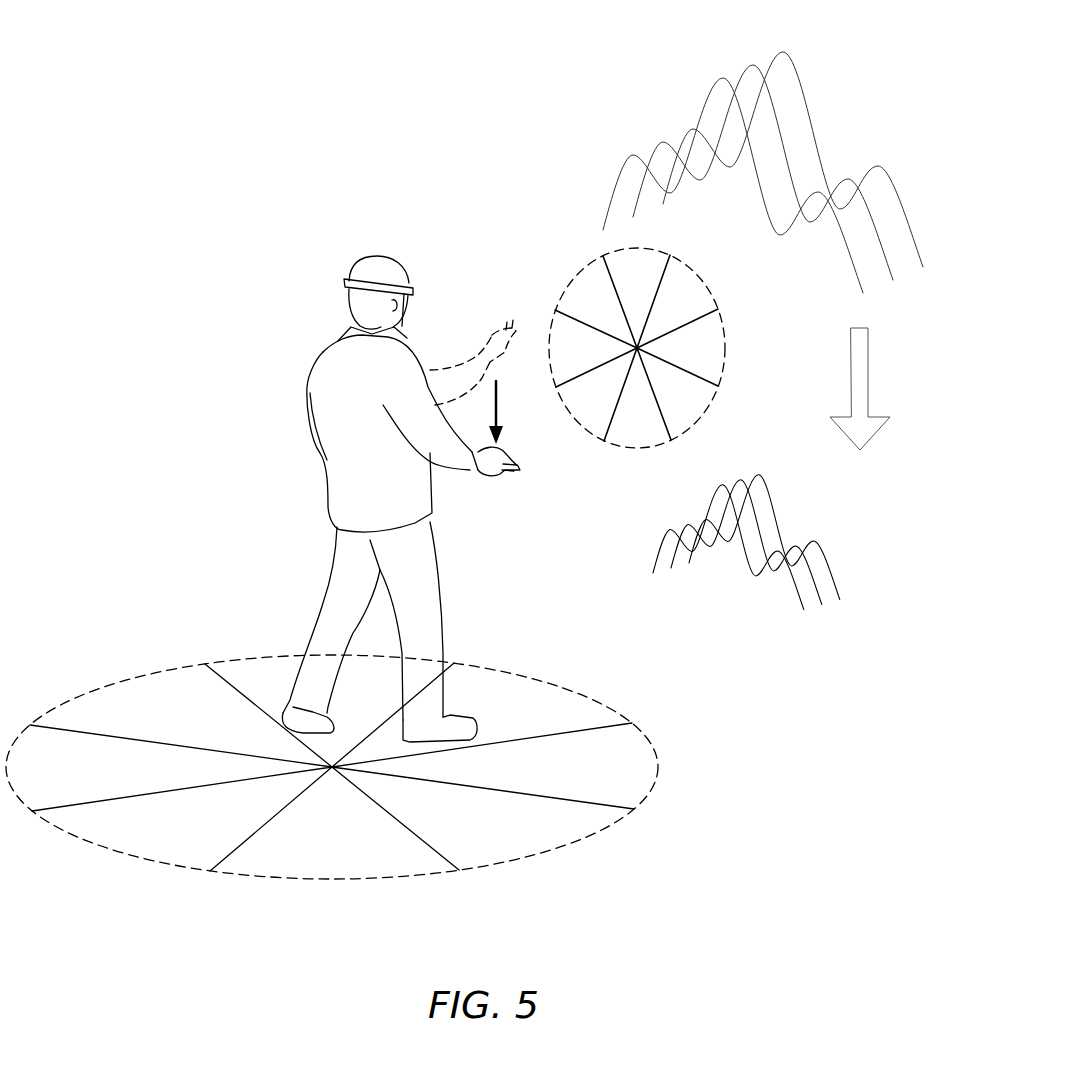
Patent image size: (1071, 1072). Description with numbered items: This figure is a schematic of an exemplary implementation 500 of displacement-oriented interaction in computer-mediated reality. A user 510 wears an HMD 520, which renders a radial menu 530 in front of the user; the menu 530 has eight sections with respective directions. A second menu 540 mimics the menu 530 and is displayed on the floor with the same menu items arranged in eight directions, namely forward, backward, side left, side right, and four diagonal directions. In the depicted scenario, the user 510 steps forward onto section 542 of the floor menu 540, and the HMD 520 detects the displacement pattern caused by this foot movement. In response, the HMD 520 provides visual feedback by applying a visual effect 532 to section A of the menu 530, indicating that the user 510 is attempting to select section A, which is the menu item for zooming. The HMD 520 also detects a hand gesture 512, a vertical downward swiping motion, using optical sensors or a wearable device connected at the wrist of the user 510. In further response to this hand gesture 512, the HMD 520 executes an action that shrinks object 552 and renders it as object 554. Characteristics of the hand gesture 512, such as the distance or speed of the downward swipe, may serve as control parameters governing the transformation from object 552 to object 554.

The environment 500 is at (193, 112).
The user 510 is at (323, 352).
The hand gesture 512 is at (500, 476).
The HMD 520 is at (414, 293).
The menu 530 is at (697, 283).
The visual effect 532 is at (650, 262).
The menu 540 is at (148, 670).
The section 542 is at (533, 692).
The object 552 is at (711, 98).
The object 554 is at (753, 572).